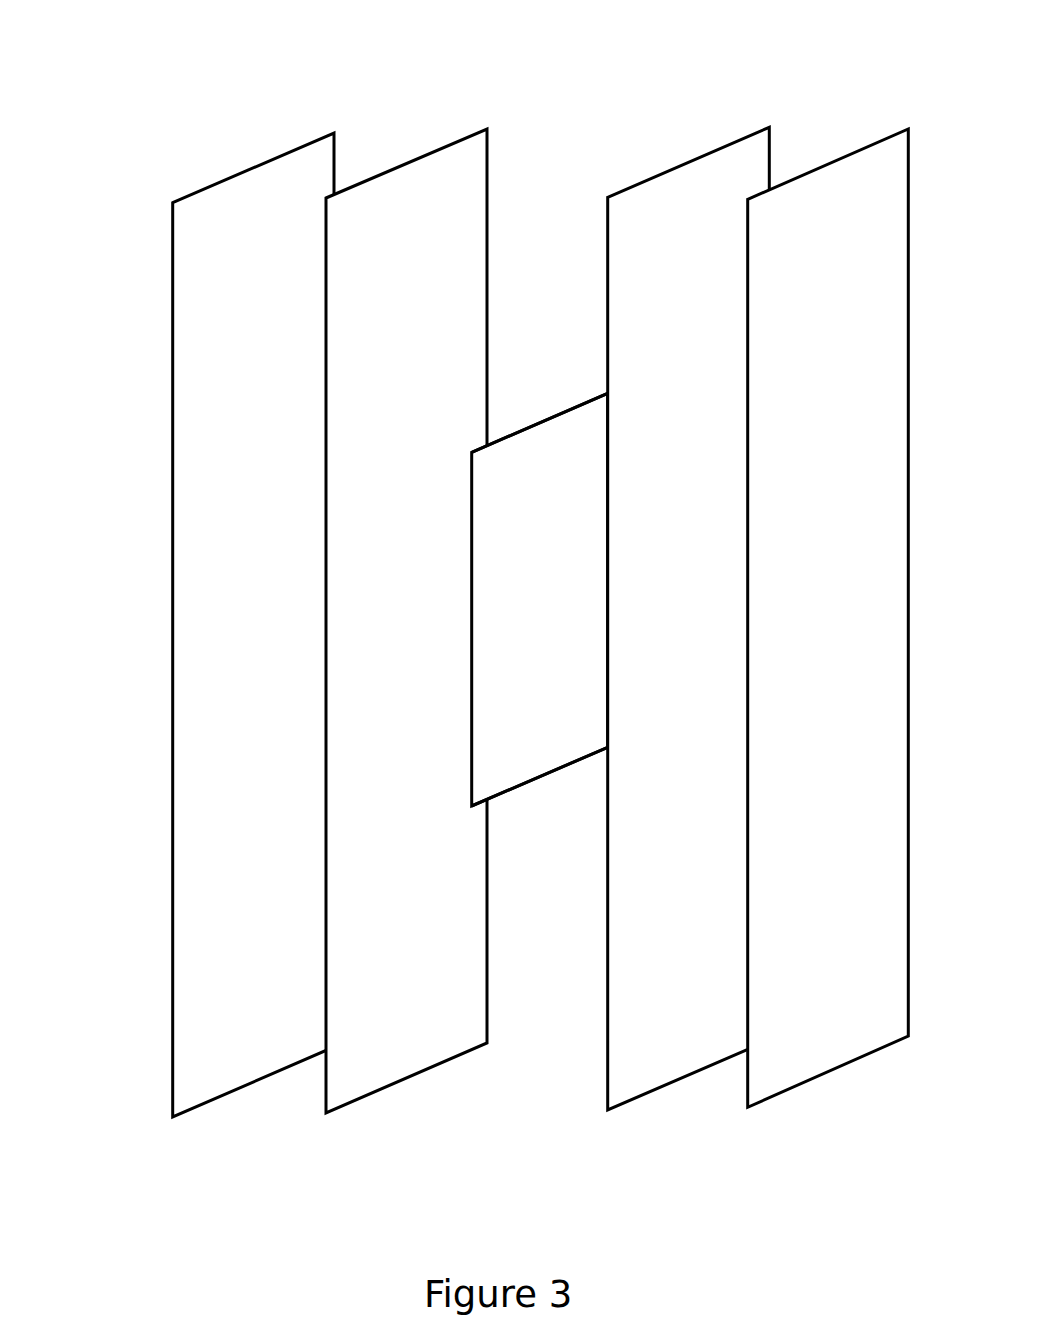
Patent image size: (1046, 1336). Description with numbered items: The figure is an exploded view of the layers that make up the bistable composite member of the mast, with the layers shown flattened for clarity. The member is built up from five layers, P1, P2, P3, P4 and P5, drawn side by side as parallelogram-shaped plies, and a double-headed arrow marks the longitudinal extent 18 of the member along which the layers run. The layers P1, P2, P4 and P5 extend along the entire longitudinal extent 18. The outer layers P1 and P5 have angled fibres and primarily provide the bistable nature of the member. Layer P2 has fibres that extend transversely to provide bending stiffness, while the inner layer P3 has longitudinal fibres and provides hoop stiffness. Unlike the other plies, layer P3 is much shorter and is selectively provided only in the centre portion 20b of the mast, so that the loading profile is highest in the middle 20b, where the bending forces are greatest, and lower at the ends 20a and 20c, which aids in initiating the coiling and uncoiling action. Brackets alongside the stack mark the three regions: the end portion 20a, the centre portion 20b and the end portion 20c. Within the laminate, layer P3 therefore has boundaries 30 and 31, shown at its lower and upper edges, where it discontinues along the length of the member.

The longitudinal extent 18 is at (534, 17).
The end portion of the mast 20a is at (88, 194).
The centre portion of the mast 20b is at (88, 507).
The end portion of the mast 20c is at (88, 812).
The boundary of layer P3 30 is at (538, 780).
The boundary of layer P3 31 is at (537, 432).
The layer P1 is at (253, 668).
The layer P2 is at (406, 666).
The layer P3 is at (540, 798).
The layer P4 is at (689, 665).
The layer P5 is at (828, 666).